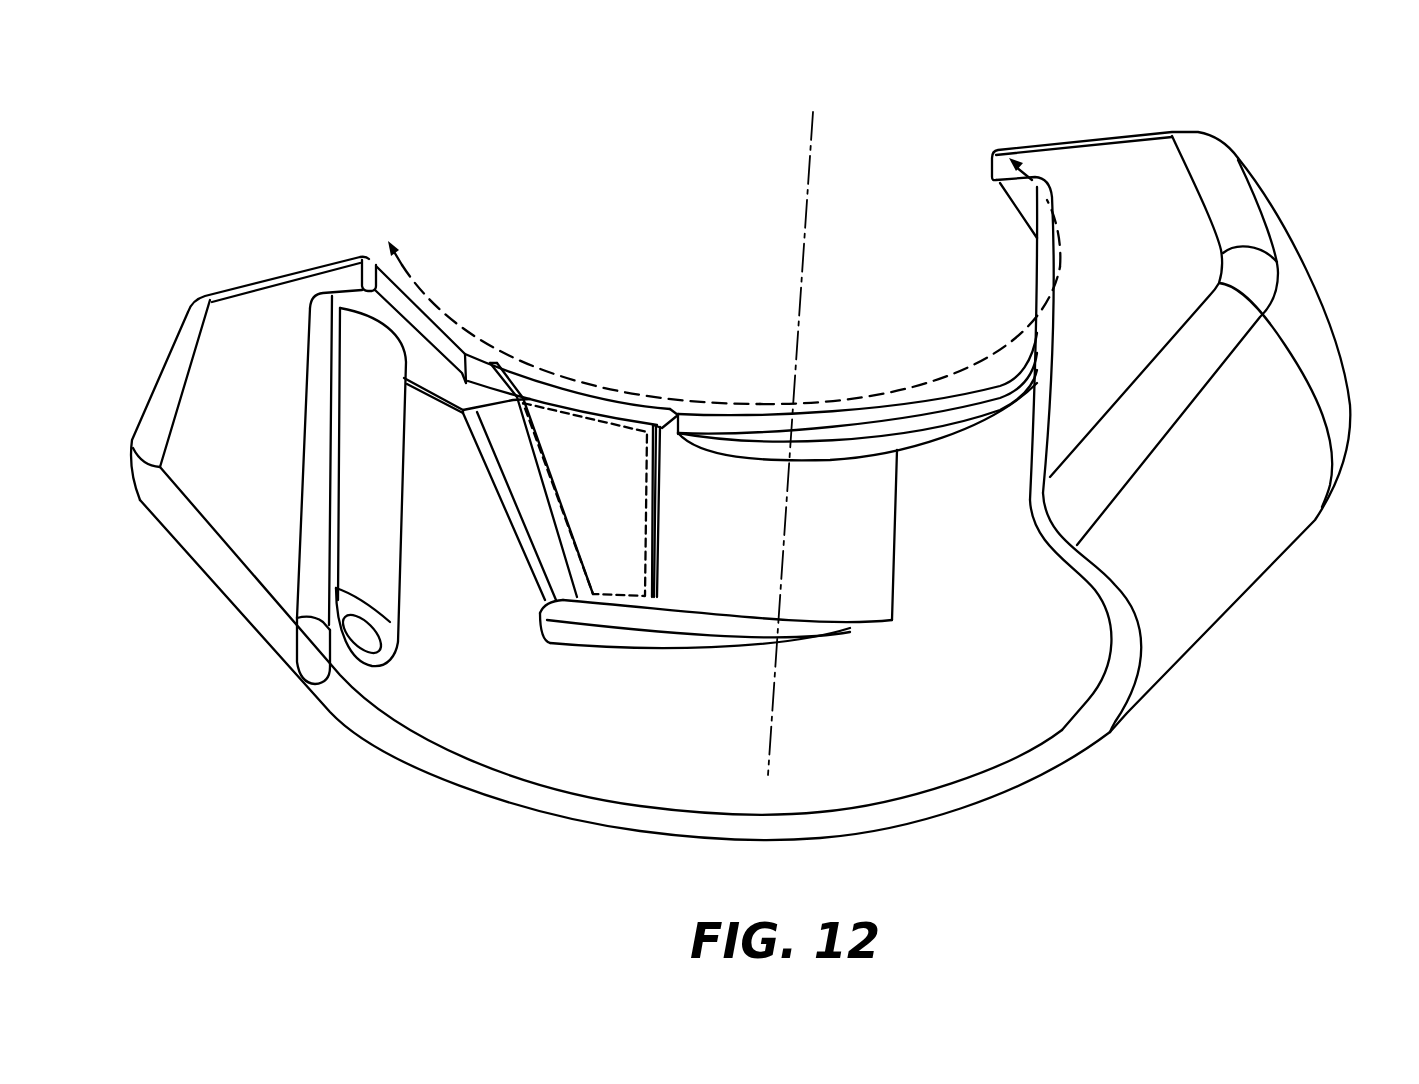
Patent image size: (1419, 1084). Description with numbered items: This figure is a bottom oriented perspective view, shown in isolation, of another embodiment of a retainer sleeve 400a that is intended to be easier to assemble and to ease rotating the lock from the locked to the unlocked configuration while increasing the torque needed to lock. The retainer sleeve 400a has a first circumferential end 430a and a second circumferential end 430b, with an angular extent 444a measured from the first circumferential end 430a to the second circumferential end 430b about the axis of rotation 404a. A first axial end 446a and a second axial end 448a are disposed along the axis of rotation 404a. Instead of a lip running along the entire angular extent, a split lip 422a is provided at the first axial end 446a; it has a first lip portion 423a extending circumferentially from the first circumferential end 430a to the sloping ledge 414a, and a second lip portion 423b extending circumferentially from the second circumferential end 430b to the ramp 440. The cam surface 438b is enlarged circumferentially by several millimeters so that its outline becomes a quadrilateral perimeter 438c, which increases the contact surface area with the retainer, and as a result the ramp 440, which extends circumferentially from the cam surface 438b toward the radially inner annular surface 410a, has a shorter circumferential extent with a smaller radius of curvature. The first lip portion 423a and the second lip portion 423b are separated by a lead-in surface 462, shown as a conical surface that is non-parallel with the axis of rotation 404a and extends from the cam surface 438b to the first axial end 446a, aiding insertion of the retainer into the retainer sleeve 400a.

The retainer sleeve 400a is at (693, 215).
The axis of rotation 404a is at (803, 325).
The radially inner annular surface 410a is at (1013, 691).
The sloping ledge 414a is at (528, 520).
The split lip 422a is at (470, 337).
The first lip portion 423a is at (413, 318).
The second lip portion 423b is at (960, 390).
The first circumferential end 430a is at (243, 367).
The second circumferential end 430b is at (1148, 243).
The cam surface 438b is at (603, 517).
The quadrilateral perimeter 438c is at (647, 519).
The ramp 440 is at (787, 585).
The angular extent 444a is at (525, 355).
The first axial end 446a is at (1093, 130).
The second axial end 448a is at (1033, 783).
The lead-in surface 462 is at (598, 407).